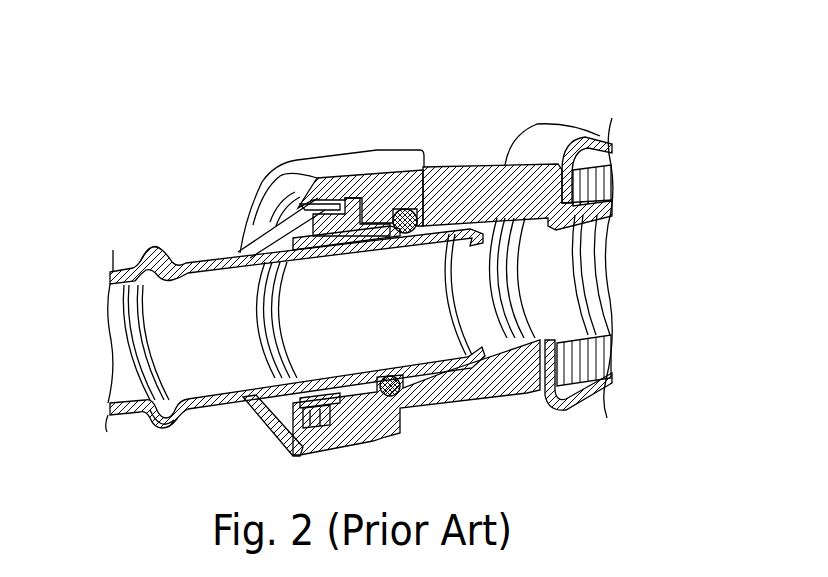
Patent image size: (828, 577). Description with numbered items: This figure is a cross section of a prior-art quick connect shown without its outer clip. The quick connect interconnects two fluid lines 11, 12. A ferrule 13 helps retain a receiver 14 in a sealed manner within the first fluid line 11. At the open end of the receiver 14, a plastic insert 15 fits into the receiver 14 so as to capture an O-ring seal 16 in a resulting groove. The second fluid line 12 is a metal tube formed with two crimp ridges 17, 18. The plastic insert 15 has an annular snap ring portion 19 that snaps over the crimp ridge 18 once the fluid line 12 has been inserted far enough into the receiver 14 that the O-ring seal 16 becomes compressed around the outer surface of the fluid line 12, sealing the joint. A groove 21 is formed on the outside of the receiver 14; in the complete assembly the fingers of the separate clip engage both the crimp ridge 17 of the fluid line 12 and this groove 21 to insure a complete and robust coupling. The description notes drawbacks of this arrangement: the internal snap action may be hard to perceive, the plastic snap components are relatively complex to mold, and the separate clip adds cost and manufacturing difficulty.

The fluid line 11 is at (603, 184).
The fluid line 12 is at (131, 418).
The ferrule 13 is at (556, 130).
The receiver 14 is at (462, 168).
The plastic insert 15 is at (350, 242).
The O-ring seal 16 is at (406, 234).
The crimp ridge 17 is at (170, 257).
The crimp ridge 18 is at (302, 373).
The annular snap ring portion 19 is at (288, 258).
The groove 21 is at (470, 398).